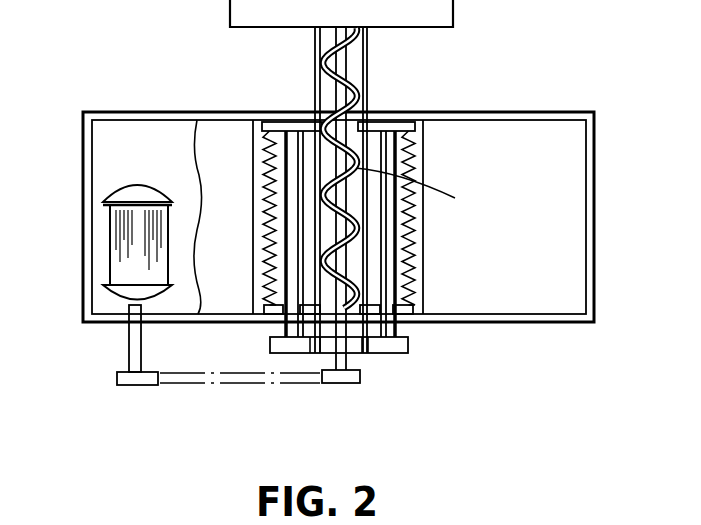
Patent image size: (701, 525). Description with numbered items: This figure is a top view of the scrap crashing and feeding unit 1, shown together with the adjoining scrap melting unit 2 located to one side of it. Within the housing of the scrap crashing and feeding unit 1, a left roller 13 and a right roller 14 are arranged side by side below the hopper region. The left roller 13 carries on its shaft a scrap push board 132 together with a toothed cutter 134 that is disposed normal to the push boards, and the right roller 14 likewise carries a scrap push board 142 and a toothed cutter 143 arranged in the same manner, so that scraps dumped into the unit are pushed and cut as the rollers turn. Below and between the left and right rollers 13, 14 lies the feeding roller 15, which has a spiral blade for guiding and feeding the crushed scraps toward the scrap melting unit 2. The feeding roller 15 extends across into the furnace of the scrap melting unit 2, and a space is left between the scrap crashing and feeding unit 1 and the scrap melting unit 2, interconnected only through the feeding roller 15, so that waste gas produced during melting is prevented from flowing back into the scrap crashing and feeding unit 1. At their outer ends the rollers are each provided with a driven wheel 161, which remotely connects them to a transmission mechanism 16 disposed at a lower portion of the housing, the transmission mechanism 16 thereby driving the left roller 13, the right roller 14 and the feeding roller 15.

The scrap crashing and feeding unit 1 is at (523, 326).
The scrap melting unit 2 is at (460, 8).
The left roller 13 is at (288, 128).
The scrap push board 132 is at (305, 143).
The toothed cutter 134 is at (265, 168).
The right roller 14 is at (387, 132).
The scrap push board 142 is at (373, 227).
The toothed cutter 143 is at (403, 151).
The feeding roller 15 is at (345, 362).
The transmission mechanism 16 is at (128, 332).
The driven wheel 161 is at (375, 392).